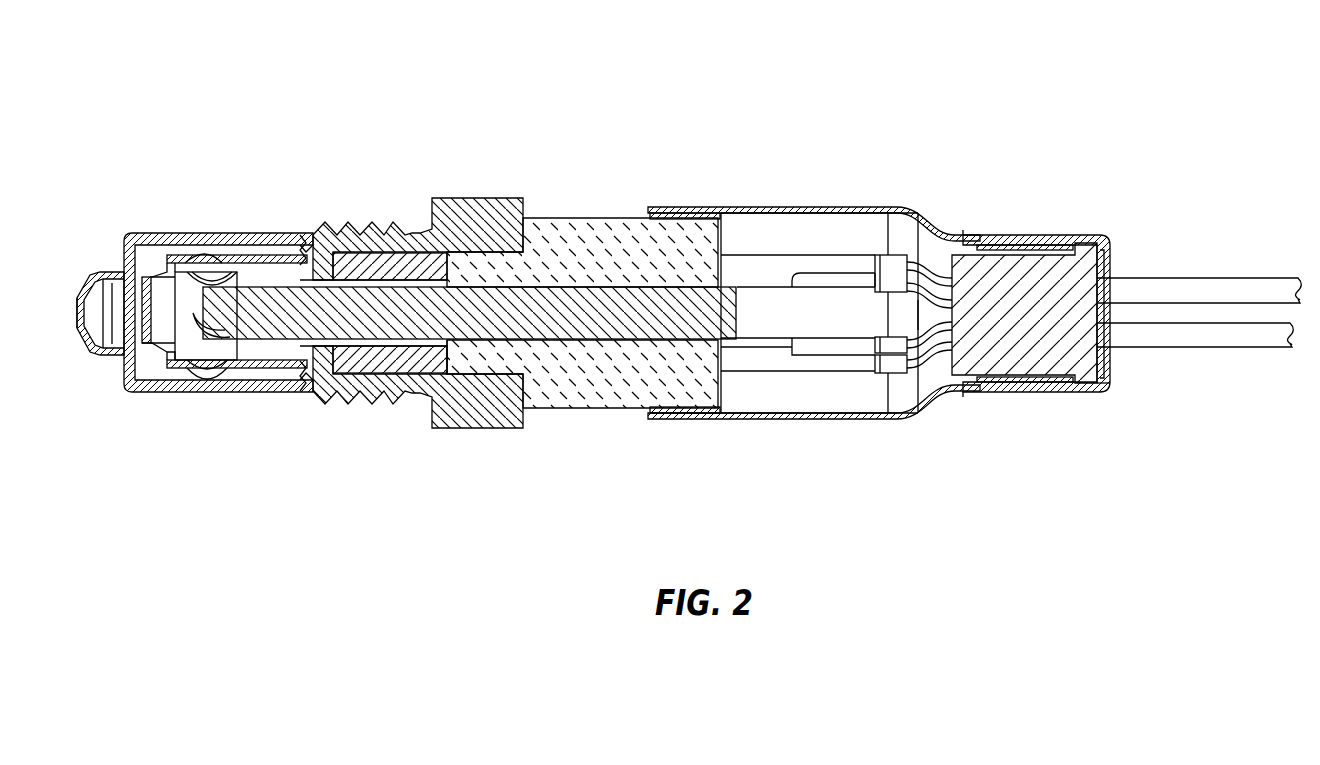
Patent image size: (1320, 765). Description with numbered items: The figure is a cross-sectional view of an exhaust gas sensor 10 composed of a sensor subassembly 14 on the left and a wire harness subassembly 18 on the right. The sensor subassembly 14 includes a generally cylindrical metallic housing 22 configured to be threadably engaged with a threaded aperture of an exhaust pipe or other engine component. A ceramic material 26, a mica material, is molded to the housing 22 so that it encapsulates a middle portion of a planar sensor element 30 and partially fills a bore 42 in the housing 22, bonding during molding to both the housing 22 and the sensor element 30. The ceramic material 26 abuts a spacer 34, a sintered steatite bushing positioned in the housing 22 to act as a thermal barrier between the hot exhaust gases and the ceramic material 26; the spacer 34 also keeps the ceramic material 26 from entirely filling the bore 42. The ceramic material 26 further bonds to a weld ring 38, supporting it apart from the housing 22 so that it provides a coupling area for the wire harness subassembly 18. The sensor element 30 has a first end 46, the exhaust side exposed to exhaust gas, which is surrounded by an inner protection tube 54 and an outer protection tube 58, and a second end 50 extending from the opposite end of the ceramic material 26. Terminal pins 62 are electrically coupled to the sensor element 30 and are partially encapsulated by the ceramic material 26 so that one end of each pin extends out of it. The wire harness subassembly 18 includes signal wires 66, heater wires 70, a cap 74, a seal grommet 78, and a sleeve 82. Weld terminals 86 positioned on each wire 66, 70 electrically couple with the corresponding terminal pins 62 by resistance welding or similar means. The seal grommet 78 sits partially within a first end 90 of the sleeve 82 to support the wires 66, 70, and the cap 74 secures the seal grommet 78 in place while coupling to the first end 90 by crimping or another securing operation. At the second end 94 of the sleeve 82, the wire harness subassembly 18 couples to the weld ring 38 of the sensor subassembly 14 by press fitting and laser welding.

The exhaust gas sensor 10 is at (1040, 98).
The sensor subassembly 14 is at (340, 170).
The wire harness subassembly 18 is at (988, 470).
The housing 22 is at (476, 205).
The ceramic material 26 is at (599, 230).
The sensor element 30 is at (573, 322).
The spacer 34 is at (388, 358).
The weld ring 38 is at (675, 220).
The bore 42 is at (470, 366).
The first end 46 is at (186, 297).
The second end 50 is at (739, 279).
The inner protection tube 54 is at (178, 365).
The outer protection tube 58 is at (140, 393).
The terminal pins 62 is at (847, 355).
The signal wires 66 is at (1185, 340).
The heater wires 70 is at (1220, 287).
The cap 74 is at (1088, 230).
The seal grommet 78 is at (997, 270).
The sleeve 82 is at (823, 208).
The weld terminals 86 is at (772, 363).
The first end 90 is at (1088, 400).
The second end 94 is at (684, 424).